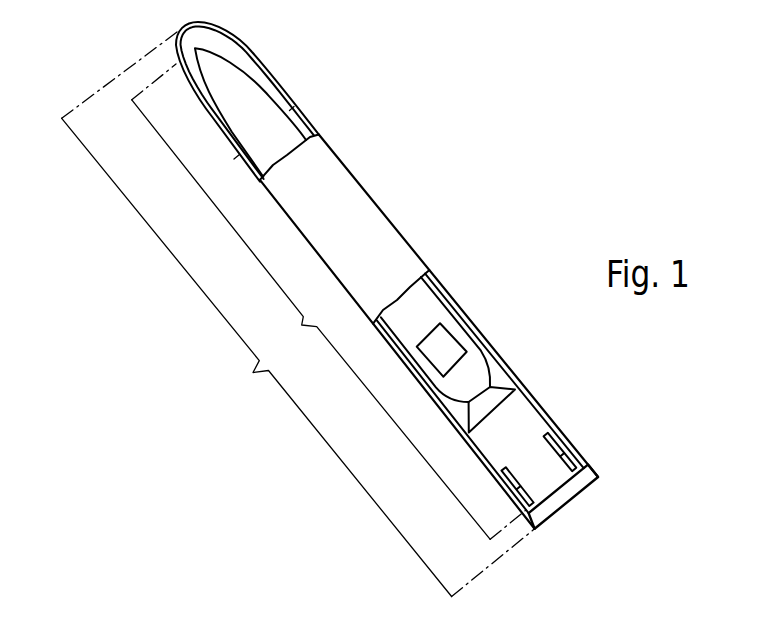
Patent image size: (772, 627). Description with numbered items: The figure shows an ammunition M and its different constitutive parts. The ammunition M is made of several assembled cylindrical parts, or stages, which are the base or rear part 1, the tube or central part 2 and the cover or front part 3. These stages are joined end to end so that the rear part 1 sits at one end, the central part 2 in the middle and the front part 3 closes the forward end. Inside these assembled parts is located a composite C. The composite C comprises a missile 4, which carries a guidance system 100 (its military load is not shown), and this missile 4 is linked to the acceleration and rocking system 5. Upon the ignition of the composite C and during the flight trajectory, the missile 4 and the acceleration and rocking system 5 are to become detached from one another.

The base or rear part 1 is at (583, 475).
The tube or central part 2 is at (396, 228).
The cover or front part 3 is at (264, 64).
The missile 4 is at (420, 303).
The acceleration and rocking system 5 is at (520, 423).
The guidance system 100 is at (443, 350).
The composite C is at (329, 301).
The ammunition M is at (298, 314).